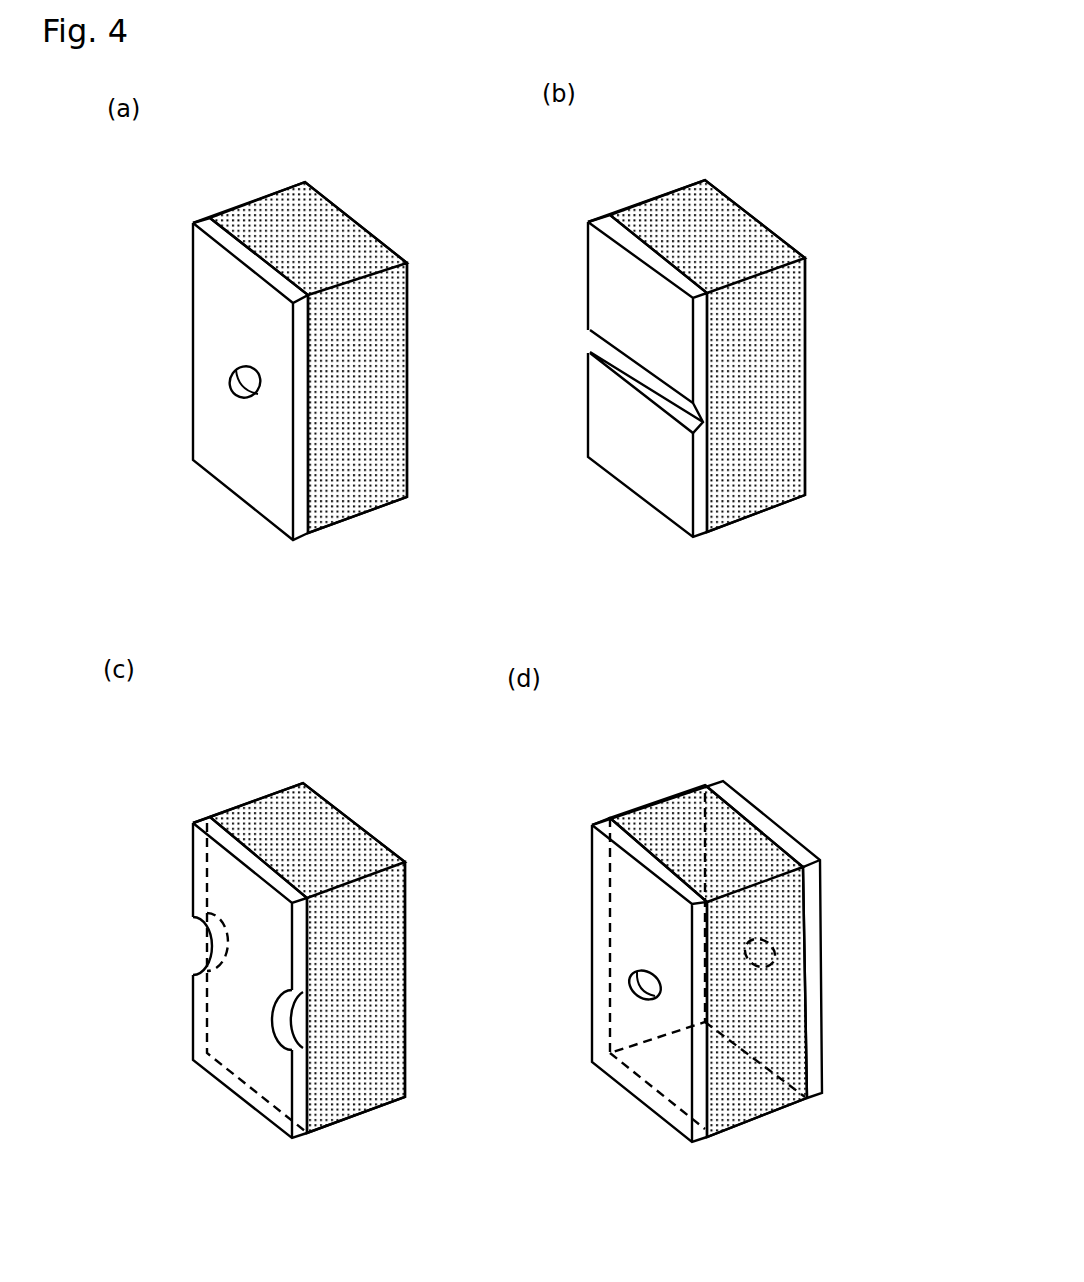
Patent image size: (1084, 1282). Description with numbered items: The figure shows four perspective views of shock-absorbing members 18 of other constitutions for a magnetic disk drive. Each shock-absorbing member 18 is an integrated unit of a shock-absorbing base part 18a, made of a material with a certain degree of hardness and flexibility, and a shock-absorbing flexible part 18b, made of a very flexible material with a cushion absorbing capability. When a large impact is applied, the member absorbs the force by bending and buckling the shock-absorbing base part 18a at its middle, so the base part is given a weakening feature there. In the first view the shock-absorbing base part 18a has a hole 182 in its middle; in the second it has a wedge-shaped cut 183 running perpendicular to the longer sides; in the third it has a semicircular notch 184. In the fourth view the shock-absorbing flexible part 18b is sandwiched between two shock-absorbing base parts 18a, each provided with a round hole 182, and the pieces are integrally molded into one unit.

The shock-absorbing member 18 is at (437, 132).
The shock-absorbing base part 18a is at (285, 288).
The shock-absorbing flexible part 18b is at (337, 375).
The hole 182 is at (233, 378).
The cut 183 is at (593, 352).
The notch 184 is at (280, 1023).